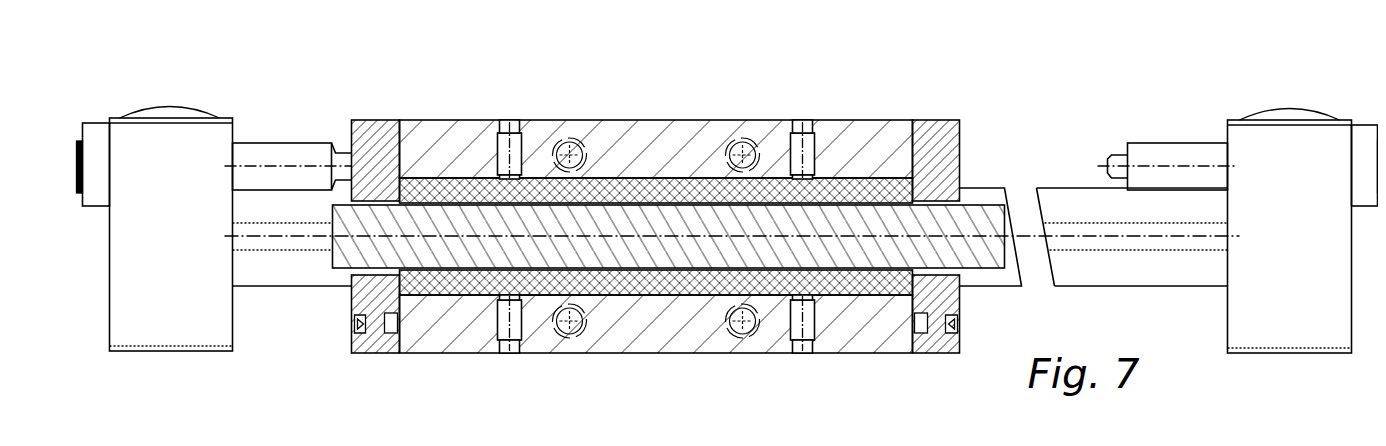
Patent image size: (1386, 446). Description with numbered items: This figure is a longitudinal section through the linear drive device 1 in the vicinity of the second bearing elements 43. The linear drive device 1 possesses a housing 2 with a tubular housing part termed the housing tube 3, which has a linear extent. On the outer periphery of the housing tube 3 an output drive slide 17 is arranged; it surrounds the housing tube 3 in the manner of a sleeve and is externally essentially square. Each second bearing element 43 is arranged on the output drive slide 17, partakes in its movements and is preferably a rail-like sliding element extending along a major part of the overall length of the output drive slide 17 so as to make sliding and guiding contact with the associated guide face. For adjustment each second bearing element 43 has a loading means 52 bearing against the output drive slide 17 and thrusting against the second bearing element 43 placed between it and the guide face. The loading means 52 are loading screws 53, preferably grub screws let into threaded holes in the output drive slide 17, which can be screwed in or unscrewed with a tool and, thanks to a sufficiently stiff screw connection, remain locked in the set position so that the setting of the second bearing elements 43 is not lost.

The linear drive device 1 is at (1144, 116).
The housing 2 is at (289, 180).
The housing tube 3 is at (288, 268).
The output drive slide 17 is at (447, 108).
The second bearing element 43 is at (655, 185).
The loading means 52 is at (502, 108).
The loading screw 53 is at (531, 124).